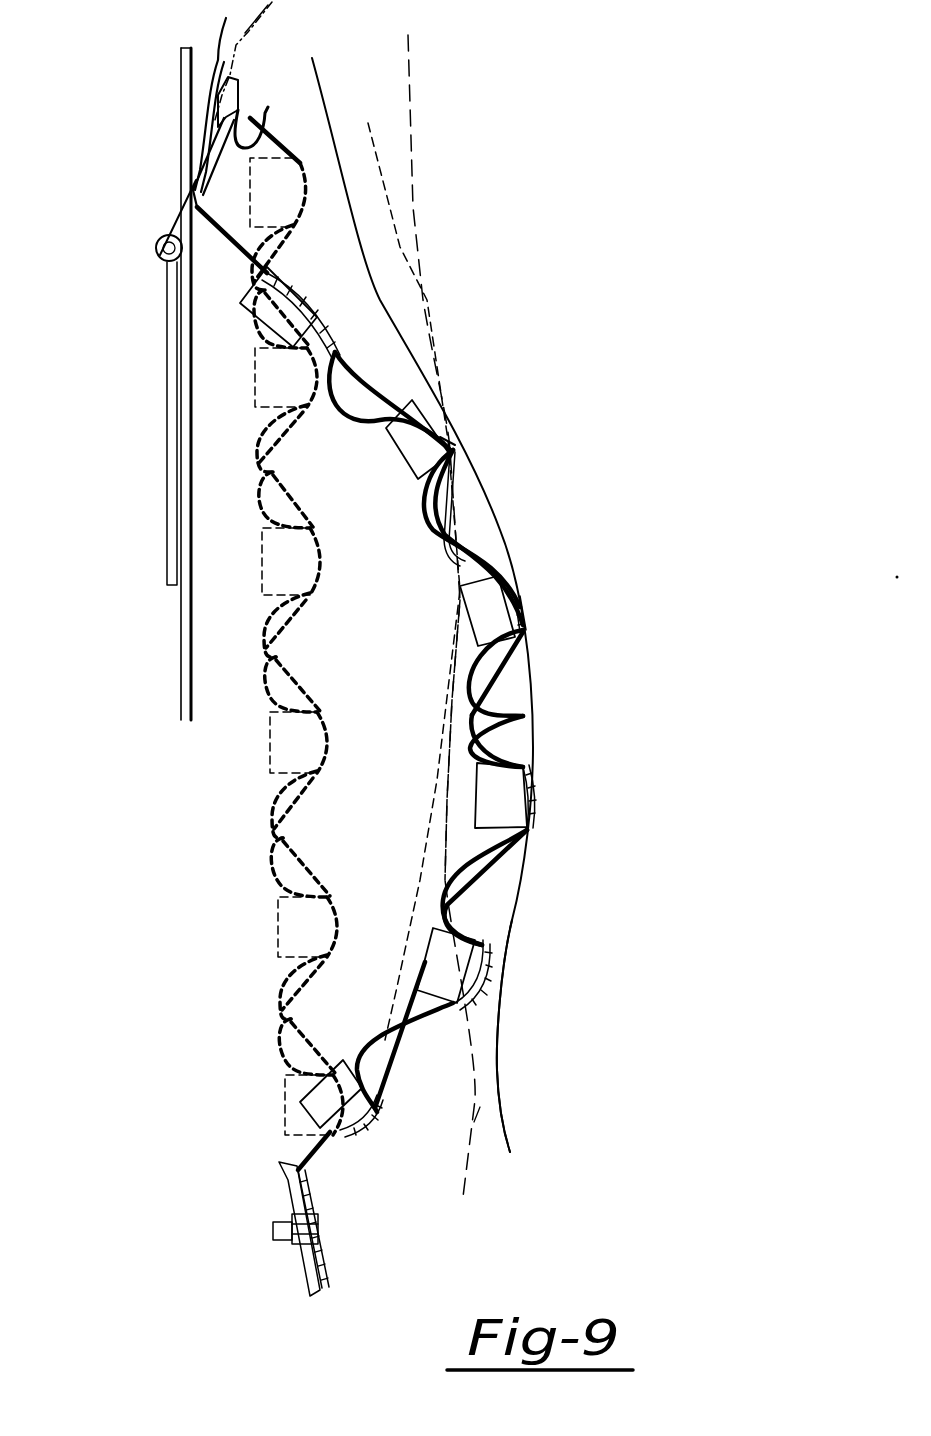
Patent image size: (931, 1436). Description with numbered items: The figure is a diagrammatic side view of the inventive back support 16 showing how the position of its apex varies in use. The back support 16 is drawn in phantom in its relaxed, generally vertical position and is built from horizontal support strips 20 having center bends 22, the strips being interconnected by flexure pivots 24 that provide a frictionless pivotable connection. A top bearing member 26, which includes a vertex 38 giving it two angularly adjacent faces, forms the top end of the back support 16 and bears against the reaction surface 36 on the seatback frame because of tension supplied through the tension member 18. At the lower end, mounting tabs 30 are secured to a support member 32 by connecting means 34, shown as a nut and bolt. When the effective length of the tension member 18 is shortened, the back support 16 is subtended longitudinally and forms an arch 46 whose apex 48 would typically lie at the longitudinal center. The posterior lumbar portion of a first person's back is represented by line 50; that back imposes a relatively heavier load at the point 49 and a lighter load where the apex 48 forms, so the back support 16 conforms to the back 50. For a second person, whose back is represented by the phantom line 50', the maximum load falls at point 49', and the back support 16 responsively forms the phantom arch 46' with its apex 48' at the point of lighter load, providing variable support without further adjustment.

The back support 16 is at (240, 810).
The tension member 18 is at (165, 425).
The horizontal support strips 20 is at (530, 598).
The center bends 22 is at (405, 462).
The flexure pivots 24 is at (405, 1032).
The top bearing member 26 is at (246, 142).
The mounting tabs 30 is at (303, 1193).
The support member 32 is at (283, 1190).
The connecting means 34 is at (327, 1223).
The reaction surface 36 is at (188, 640).
The vertex 38 is at (204, 98).
The arch 46 is at (434, 672).
The arch 46' is at (337, 568).
The apex 48 is at (585, 621).
The apex 48' is at (510, 387).
The point of heavier load 49 is at (518, 479).
The point of maximum load 49' is at (392, 740).
The line representing back 50 is at (571, 1026).
The line representing back 50' is at (464, 634).